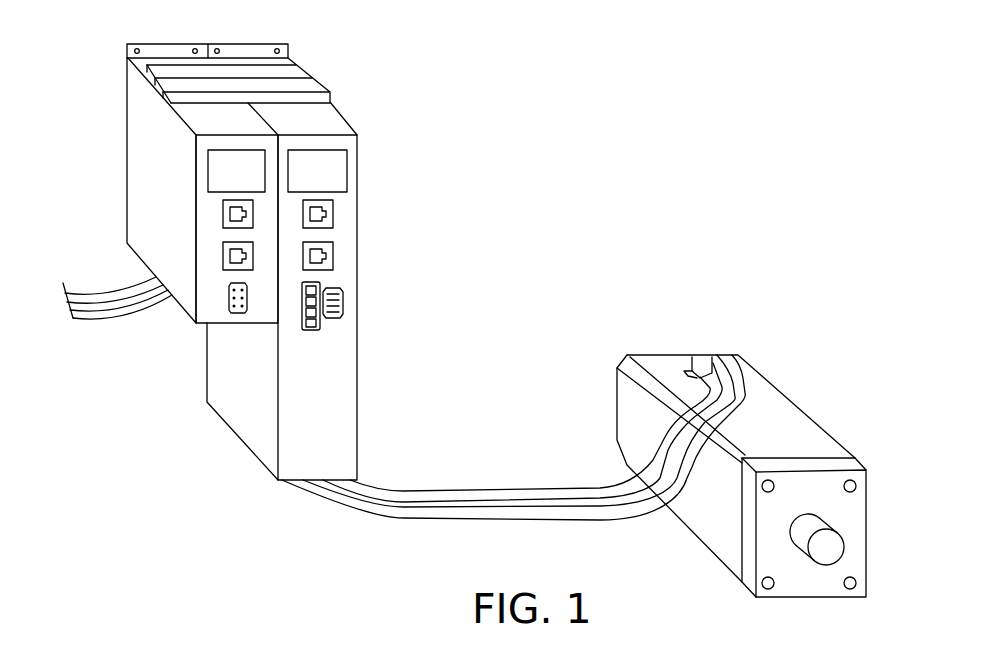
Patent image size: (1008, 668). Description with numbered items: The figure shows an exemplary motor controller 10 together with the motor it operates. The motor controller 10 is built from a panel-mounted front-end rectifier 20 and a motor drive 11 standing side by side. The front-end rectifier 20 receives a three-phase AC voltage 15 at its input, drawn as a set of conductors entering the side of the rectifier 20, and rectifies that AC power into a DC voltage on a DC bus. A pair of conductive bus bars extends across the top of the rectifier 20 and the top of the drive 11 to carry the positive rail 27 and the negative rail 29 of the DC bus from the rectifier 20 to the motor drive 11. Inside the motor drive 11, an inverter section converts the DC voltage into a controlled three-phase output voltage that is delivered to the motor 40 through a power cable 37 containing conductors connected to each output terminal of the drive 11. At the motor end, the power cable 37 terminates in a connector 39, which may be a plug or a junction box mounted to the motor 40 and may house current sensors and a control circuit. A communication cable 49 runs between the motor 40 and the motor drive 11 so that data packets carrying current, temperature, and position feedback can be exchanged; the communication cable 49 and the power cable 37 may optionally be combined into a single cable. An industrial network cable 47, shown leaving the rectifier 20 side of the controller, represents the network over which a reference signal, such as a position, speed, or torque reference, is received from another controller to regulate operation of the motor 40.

The motor controller 10 is at (390, 70).
The motor drive 11 is at (323, 127).
The three-phase AC voltage 15 is at (88, 290).
The front-end rectifier 20 is at (137, 132).
The positive rail 27 is at (297, 72).
The negative rail 29 is at (315, 88).
The power cable 37 is at (452, 497).
The connector 39 is at (698, 355).
The motor 40 is at (767, 382).
The industrial network cable 47 is at (113, 308).
The communication cable 49 is at (418, 513).